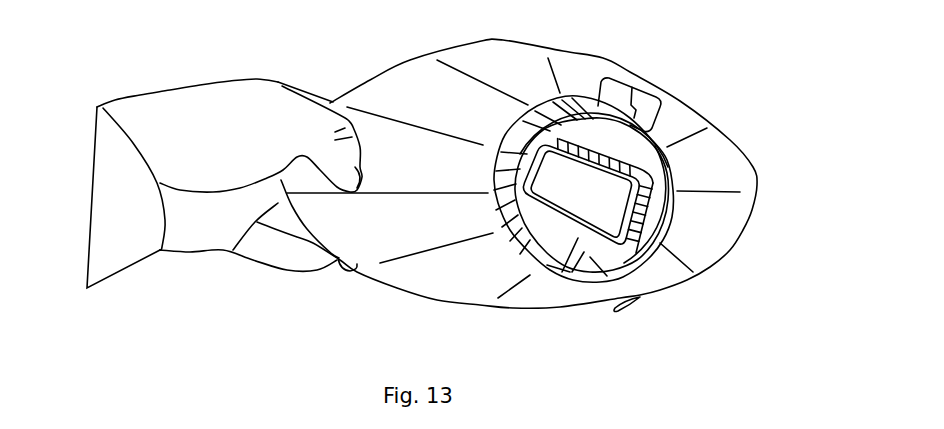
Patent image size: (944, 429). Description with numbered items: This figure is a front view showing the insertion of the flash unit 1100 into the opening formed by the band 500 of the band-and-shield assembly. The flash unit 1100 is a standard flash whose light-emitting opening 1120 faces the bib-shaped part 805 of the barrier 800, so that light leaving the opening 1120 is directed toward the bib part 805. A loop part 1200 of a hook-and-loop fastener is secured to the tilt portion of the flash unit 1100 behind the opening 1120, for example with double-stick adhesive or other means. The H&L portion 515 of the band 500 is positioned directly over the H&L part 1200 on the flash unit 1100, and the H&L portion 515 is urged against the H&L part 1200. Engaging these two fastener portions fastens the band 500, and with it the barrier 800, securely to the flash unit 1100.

The band 500 is at (532, 107).
The H&L portion of the band 515 is at (740, 192).
The barrier 800 is at (722, 82).
The bib-shaped part 805 is at (297, 307).
The flash unit 1100 is at (540, 212).
The opening 1120 is at (628, 218).
The loop part of an H&L fastener 1200 is at (584, 134).